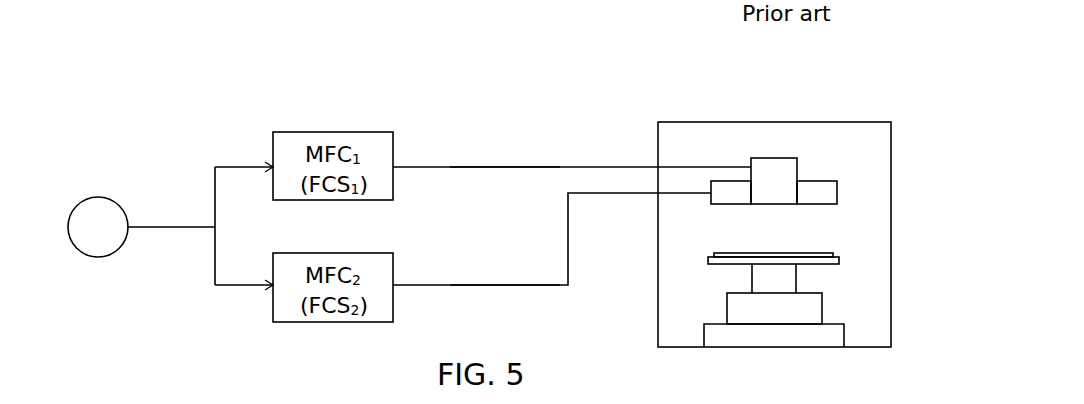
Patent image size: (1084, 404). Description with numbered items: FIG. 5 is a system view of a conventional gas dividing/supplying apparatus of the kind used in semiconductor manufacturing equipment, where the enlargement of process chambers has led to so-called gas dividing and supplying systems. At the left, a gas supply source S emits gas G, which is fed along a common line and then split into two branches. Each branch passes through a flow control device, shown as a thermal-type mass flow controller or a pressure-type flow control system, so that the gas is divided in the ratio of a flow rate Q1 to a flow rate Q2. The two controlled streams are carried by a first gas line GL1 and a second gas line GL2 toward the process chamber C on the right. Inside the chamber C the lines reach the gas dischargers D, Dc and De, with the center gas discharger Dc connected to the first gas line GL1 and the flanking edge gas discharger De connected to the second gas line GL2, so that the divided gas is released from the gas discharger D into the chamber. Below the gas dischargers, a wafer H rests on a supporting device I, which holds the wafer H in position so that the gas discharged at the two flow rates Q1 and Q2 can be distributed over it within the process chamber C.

The gas supply source S is at (98, 227).
The gas G is at (166, 228).
The flow rate Q1 is at (497, 164).
The flow rate Q2 is at (497, 283).
The first gas line GL1 is at (597, 165).
The second gas line GL2 is at (538, 289).
The process chamber C is at (718, 121).
The gas discharger D is at (793, 141).
The gas discharger Dc is at (776, 172).
The gas discharger De is at (803, 149).
The wafer H is at (808, 250).
The supporting device I is at (787, 279).